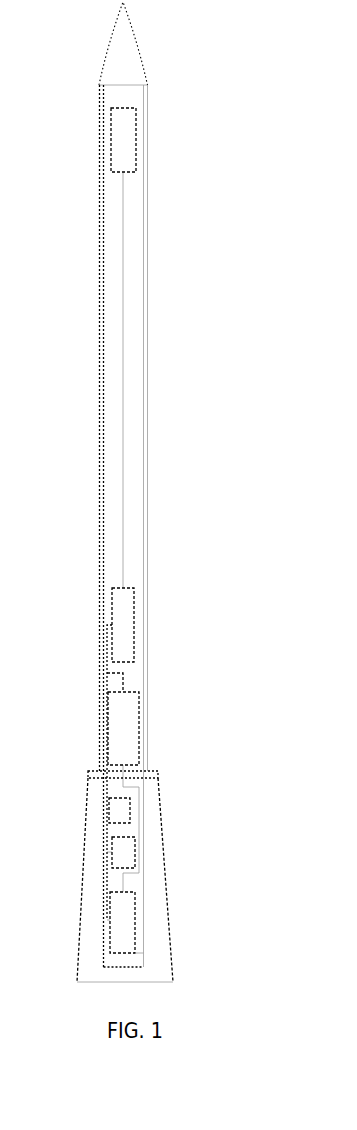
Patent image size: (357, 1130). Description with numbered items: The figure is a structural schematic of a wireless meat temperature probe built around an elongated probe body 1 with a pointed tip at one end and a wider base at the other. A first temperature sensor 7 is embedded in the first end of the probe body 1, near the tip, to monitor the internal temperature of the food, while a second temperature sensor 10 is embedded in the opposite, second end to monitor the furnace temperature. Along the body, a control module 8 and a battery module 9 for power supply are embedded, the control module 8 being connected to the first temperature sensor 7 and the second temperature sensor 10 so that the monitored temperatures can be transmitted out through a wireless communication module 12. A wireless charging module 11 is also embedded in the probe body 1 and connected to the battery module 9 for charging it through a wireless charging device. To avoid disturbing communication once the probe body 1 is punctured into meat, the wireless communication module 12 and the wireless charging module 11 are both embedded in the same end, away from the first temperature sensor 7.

The probe body 1 is at (147, 350).
The first temperature sensor 7 is at (123, 137).
The control module 8 is at (127, 622).
The battery module 9 is at (122, 735).
The second temperature sensor 10 is at (127, 837).
The wireless charging module 11 is at (122, 930).
The wireless communication module 12 is at (117, 808).